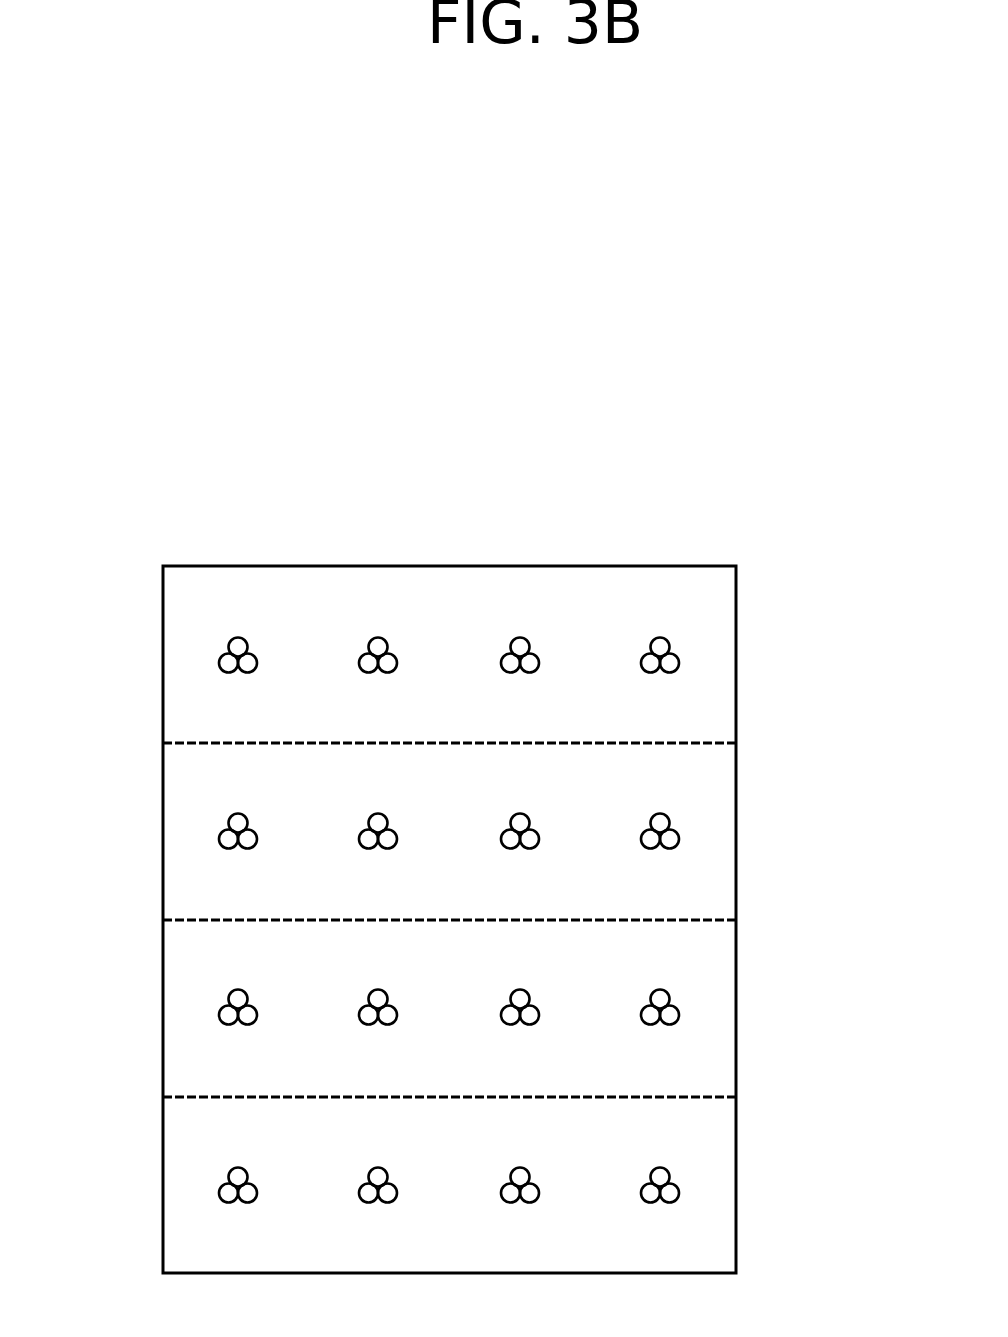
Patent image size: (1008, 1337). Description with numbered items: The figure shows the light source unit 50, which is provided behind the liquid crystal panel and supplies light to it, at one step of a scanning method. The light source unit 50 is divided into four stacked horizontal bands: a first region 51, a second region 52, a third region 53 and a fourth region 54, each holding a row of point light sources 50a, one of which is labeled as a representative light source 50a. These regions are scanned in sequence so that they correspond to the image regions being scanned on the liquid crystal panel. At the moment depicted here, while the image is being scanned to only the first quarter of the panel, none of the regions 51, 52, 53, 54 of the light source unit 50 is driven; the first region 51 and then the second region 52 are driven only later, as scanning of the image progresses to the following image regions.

The light source unit 50 is at (810, 574).
The point light source 50a is at (663, 997).
The first region 51 is at (177, 648).
The second region 52 is at (177, 825).
The third region 53 is at (462, 1008).
The fourth region 54 is at (177, 1179).